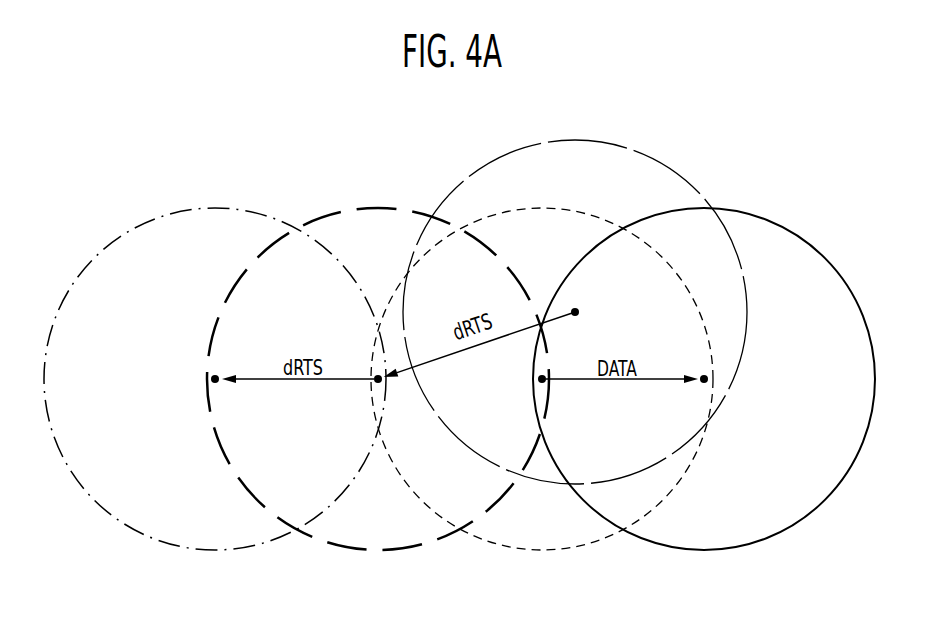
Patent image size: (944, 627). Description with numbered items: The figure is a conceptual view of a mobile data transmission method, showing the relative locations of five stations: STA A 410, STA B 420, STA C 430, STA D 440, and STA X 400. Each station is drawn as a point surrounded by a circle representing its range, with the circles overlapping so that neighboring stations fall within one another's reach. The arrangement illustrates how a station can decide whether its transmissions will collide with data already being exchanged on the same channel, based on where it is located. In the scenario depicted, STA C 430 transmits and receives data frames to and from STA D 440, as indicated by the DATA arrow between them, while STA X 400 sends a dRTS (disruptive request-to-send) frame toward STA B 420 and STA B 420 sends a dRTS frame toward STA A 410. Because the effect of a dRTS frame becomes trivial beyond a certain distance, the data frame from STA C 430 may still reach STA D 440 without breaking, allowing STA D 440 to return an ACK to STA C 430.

The STA X 400 is at (574, 310).
The STA A 410 is at (214, 376).
The STA B 420 is at (377, 376).
The STA C 430 is at (545, 382).
The STA D 440 is at (707, 382).